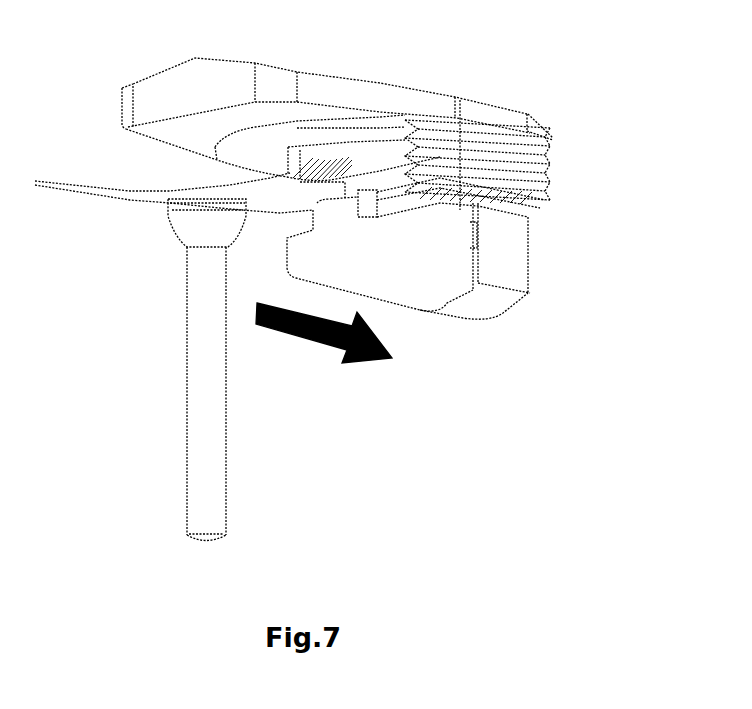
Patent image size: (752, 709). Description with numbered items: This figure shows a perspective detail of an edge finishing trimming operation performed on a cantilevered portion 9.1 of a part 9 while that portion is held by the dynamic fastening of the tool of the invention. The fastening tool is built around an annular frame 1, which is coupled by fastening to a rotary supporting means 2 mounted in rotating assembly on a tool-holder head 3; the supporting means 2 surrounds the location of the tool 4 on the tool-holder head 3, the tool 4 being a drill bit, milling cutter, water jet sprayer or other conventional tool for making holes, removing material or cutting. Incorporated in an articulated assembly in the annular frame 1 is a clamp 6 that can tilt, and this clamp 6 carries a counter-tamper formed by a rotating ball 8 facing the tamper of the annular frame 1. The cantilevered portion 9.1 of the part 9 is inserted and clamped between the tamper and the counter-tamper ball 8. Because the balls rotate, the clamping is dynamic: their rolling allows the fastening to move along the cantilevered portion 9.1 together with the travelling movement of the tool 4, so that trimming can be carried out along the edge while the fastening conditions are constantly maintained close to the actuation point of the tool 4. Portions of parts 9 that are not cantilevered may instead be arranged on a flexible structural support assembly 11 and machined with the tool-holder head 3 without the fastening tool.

The annular frame 1 is at (257, 150).
The rotary supporting means 2 is at (397, 152).
The tool-holder head 3 is at (382, 95).
The tool 4 is at (370, 207).
The clamp 6 is at (510, 257).
The rotating ball 8 is at (330, 183).
The part 9 is at (130, 200).
The cantilevered portion 9.1 is at (525, 217).
The flexible structural support assembly 11 is at (200, 403).